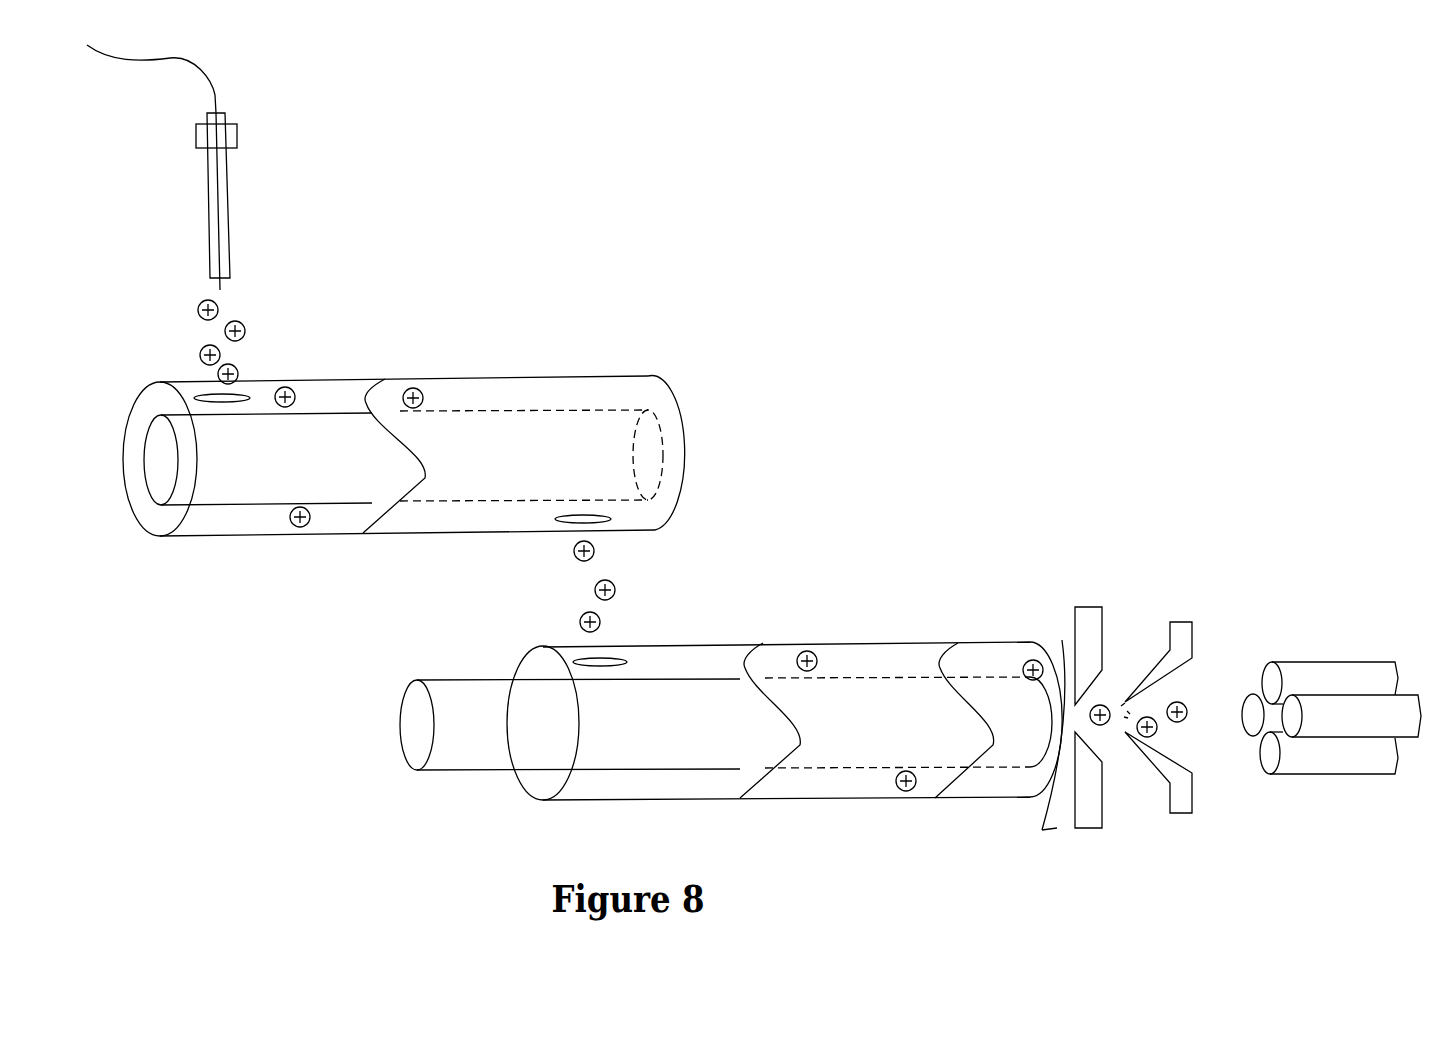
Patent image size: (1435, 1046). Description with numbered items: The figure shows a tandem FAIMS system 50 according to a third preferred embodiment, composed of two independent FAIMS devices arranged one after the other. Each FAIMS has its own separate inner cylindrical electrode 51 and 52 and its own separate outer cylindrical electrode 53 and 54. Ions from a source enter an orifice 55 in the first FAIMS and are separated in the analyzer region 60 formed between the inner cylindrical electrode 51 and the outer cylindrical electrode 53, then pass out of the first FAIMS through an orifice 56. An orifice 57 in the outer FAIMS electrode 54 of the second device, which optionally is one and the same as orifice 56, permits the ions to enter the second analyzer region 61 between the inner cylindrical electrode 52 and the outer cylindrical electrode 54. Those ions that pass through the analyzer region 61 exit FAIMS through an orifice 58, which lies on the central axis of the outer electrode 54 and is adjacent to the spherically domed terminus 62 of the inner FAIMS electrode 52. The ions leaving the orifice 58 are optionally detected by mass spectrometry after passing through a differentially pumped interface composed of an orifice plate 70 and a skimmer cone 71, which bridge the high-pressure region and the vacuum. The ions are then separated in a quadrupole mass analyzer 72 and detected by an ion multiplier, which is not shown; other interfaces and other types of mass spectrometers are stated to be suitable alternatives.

The tandem FAIMS system 50 is at (188, 753).
The inner cylindrical electrode 51 is at (162, 480).
The inner cylindrical electrode 52 is at (463, 772).
The outer cylindrical electrode 53 is at (600, 377).
The outer cylindrical electrode 54 is at (937, 643).
The orifice 55 is at (237, 396).
The orifice 56 is at (595, 520).
The orifice 57 is at (590, 660).
The orifice 58 is at (1062, 640).
The analyzer region 60 is at (497, 393).
The analyzer region 61 is at (848, 657).
The spherically domed terminus 62 is at (1057, 828).
The orifice plate 70 is at (1092, 607).
The skimmer cone 71 is at (1183, 622).
The quadrupole mass analyzer 72 is at (1330, 772).